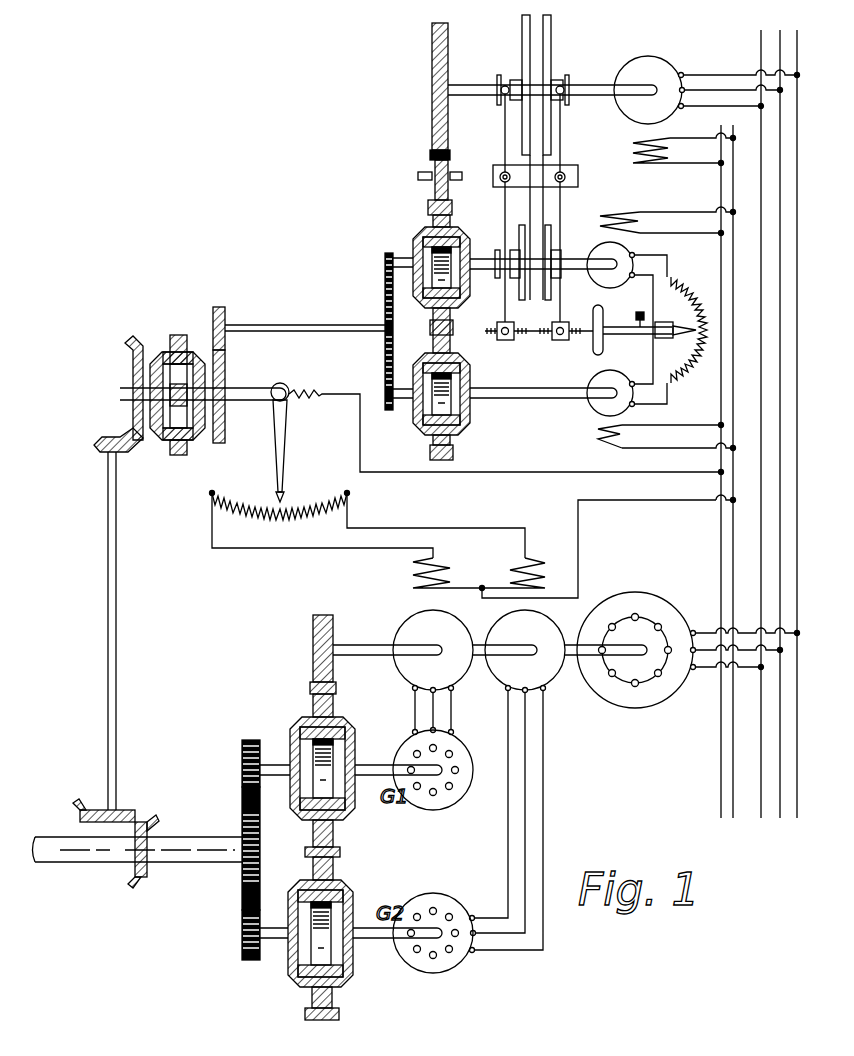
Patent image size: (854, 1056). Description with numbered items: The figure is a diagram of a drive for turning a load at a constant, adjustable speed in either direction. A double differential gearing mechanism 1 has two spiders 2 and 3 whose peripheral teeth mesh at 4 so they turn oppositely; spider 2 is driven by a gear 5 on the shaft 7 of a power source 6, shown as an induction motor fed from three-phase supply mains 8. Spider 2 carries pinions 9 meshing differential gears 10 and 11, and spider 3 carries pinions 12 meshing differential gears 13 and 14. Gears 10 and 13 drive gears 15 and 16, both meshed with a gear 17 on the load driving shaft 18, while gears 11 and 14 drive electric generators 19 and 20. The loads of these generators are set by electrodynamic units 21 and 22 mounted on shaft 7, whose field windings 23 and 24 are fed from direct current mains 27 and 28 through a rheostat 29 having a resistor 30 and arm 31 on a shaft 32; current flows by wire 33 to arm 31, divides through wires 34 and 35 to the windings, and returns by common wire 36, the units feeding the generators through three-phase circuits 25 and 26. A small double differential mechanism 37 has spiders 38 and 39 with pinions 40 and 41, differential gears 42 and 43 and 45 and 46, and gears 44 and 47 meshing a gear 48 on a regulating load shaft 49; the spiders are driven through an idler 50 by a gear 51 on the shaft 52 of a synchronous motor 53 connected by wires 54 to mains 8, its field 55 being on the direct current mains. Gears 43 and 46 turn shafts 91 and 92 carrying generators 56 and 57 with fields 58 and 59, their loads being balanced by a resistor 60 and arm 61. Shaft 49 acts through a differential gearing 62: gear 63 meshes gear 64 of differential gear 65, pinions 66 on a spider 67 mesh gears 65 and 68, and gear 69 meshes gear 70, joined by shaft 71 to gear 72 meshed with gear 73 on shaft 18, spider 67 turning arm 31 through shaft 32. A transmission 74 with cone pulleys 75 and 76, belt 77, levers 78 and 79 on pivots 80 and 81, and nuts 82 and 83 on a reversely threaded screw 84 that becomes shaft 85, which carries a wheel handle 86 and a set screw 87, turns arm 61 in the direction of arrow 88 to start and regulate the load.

The double differential gearing mechanism 1 is at (258, 707).
The spider 2 is at (337, 692).
The spider 3 is at (334, 864).
The meshed gear teeth 4 is at (340, 850).
The gear 5 is at (334, 631).
The power source 6 is at (642, 597).
The shaft 7 is at (372, 645).
The three phase alternating current supply mains 8 is at (778, 820).
The pinions 9 is at (336, 723).
The differential gear 10 is at (290, 746).
The differential gear 11 is at (355, 744).
The pinions 12 is at (336, 882).
The differential gear 13 is at (290, 964).
The differential gear 14 is at (353, 962).
The gear 15 is at (242, 758).
The gear 16 is at (242, 935).
The gear 17 is at (242, 883).
The load driving shaft 18 is at (73, 863).
The electric generator 19 is at (463, 789).
The electric generator 20 is at (449, 896).
The electrodynamic unit 21 is at (462, 678).
The electrodynamic unit 22 is at (555, 678).
The direct current field winding 23 is at (441, 566).
The direct current field winding 24 is at (514, 567).
The three phase circuit 25 is at (440, 717).
The three phase circuit 26 is at (527, 826).
The direct current supply main 27 is at (720, 776).
The direct current supply main 28 is at (732, 794).
The rheostat 29 is at (318, 478).
The resistor 30 is at (310, 517).
The rotary rheostat arm 31 is at (285, 456).
The rheostat shaft 32 is at (240, 392).
The wire 33 is at (506, 443).
The wire 34 is at (320, 549).
The wire 35 is at (418, 527).
The common wire 36 is at (638, 501).
The double differential mechanism 37 is at (406, 236).
The differential spider 38 is at (452, 214).
The differential spider 39 is at (450, 351).
The pinions 40 is at (458, 236).
The pinions 41 is at (452, 357).
The differential gear 42 is at (413, 244).
The differential gear 43 is at (470, 250).
The gear 44 is at (391, 263).
The differential gear 45 is at (416, 418).
The differential gear 46 is at (470, 412).
The gear 47 is at (391, 394).
The gear 48 is at (385, 353).
The regulating load shaft 49 is at (298, 326).
The idler 50 is at (449, 162).
The gear 51 is at (449, 124).
The shaft 52 is at (470, 85).
The synchronous alternating current motor 53 is at (618, 78).
The three phase wires 54 is at (708, 92).
The direct current field 55 is at (670, 150).
The electric generator 56 is at (606, 285).
The electric generator 57 is at (616, 372).
The field 58 is at (642, 222).
The field 59 is at (624, 436).
The resistor 60 is at (686, 292).
The rheostat arm 61 is at (682, 336).
The differential gearing 62 is at (160, 464).
The gear 63 is at (225, 318).
The gear 64 is at (225, 358).
The differential gear 65 is at (206, 411).
The differential pinions 66 is at (188, 358).
The differential spider 67 is at (178, 336).
The differential gear 68 is at (133, 414).
The gear 69 is at (133, 378).
The gear 70 is at (97, 452).
The shaft 71 is at (107, 576).
The gear 72 is at (126, 811).
The gear 73 is at (152, 826).
The variable speed-ratio transmission device 74 is at (584, 178).
The cone pulley 75 is at (545, 50).
The cone pulley 76 is at (546, 228).
The belt 77 is at (531, 207).
The lever 78 is at (504, 134).
The lever 79 is at (562, 135).
The pivot 80 is at (499, 178).
The pivot 81 is at (567, 180).
The nut 82 is at (505, 341).
The nut 83 is at (560, 341).
The reversely threaded screw 84 is at (541, 335).
The shaft 85 is at (623, 327).
The wheel handle 86 is at (598, 355).
The set screw 87 is at (640, 312).
The arrow 88 is at (668, 322).
The shaft g1 91 is at (483, 272).
The shaft g2 92 is at (486, 388).